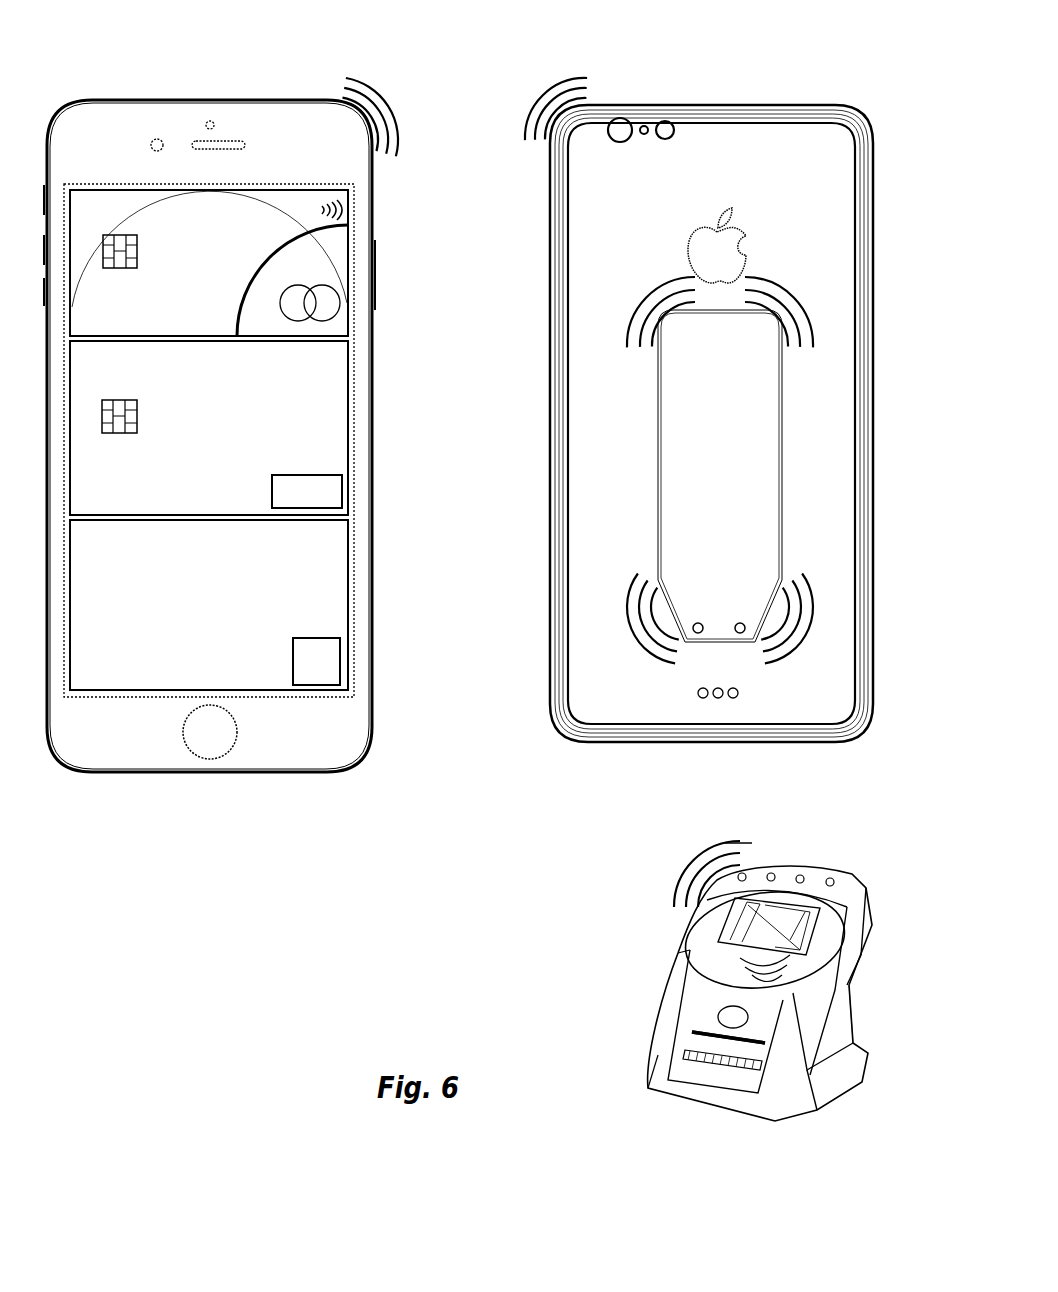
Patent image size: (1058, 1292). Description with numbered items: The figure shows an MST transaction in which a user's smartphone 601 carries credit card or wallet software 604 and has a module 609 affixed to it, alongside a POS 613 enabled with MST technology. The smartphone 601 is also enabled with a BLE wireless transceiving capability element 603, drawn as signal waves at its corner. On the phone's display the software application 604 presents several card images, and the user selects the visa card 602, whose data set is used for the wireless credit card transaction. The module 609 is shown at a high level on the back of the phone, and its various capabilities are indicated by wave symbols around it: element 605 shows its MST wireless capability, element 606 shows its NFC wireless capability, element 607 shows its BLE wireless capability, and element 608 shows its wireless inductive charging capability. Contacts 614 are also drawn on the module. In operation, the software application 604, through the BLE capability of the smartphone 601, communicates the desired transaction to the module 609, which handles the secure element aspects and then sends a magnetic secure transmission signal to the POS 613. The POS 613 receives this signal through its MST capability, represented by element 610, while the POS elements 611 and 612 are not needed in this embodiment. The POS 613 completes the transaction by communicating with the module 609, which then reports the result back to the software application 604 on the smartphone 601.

The smartphone 601 is at (128, 100).
The visa card 602 is at (310, 393).
The BLE wireless transceiving capability element 603 is at (393, 108).
The credit card or wallet software 604 is at (277, 730).
The MST wireless capability 605 is at (640, 297).
The NFC wireless capability 606 is at (790, 290).
The BLE wireless capability 607 is at (635, 628).
The wireless inductive charging capability 608 is at (805, 628).
The module 609 is at (685, 487).
The MST capability 610 is at (697, 862).
The POS element 611 is at (815, 1030).
The POS element 612 is at (693, 1033).
The POS 613 is at (606, 940).
The electrode contacts 614 is at (700, 622).